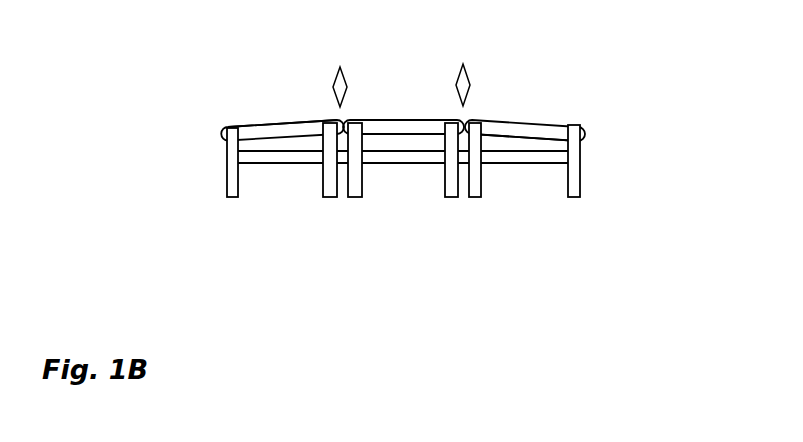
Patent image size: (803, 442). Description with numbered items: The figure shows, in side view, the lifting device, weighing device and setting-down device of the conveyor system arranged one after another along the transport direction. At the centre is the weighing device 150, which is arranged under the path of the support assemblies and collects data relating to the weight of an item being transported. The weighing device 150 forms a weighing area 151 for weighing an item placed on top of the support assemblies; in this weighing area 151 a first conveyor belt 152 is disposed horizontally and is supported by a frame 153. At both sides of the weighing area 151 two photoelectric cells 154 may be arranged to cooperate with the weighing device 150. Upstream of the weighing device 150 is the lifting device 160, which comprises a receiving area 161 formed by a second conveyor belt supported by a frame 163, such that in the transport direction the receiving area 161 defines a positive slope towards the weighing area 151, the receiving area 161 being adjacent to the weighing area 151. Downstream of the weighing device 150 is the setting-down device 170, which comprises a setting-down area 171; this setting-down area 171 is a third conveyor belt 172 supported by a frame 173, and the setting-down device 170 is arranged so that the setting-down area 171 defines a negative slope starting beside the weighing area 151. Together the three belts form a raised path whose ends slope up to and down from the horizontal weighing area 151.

The weighing device 150 is at (426, 96).
The weighing area 151 is at (372, 117).
The first conveyor belt 152 is at (258, 131).
The frame 153 is at (397, 165).
The photoelectric cell 154 is at (337, 76).
The lifting device 160 is at (233, 103).
The receiving area 161 is at (275, 120).
The frame 163 is at (227, 160).
The setting-down device 170 is at (550, 102).
The setting-down area 171 is at (508, 118).
The third conveyor belt 172 is at (543, 132).
The frame 173 is at (580, 164).